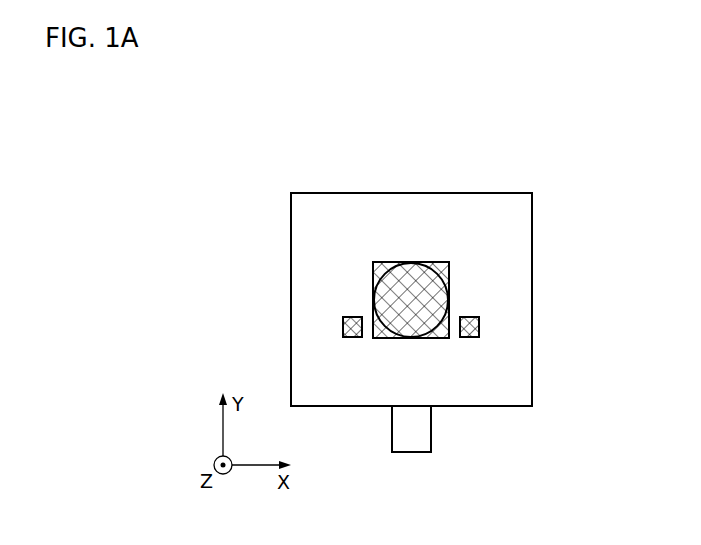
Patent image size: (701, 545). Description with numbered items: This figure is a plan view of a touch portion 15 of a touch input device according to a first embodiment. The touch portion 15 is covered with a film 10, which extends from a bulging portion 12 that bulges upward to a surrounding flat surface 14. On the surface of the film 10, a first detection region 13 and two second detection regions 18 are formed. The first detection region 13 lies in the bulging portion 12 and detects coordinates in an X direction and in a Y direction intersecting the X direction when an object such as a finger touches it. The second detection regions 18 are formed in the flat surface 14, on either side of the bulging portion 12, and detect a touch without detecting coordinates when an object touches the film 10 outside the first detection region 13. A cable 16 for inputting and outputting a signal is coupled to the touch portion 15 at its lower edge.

The film 10 is at (532, 266).
The bulging portion 12 is at (449, 272).
The first detection region 13 is at (449, 309).
The flat surface 14 is at (483, 204).
The touch portion 15 is at (506, 147).
The cable 16 is at (431, 432).
The second detection regions 18 is at (479, 328).